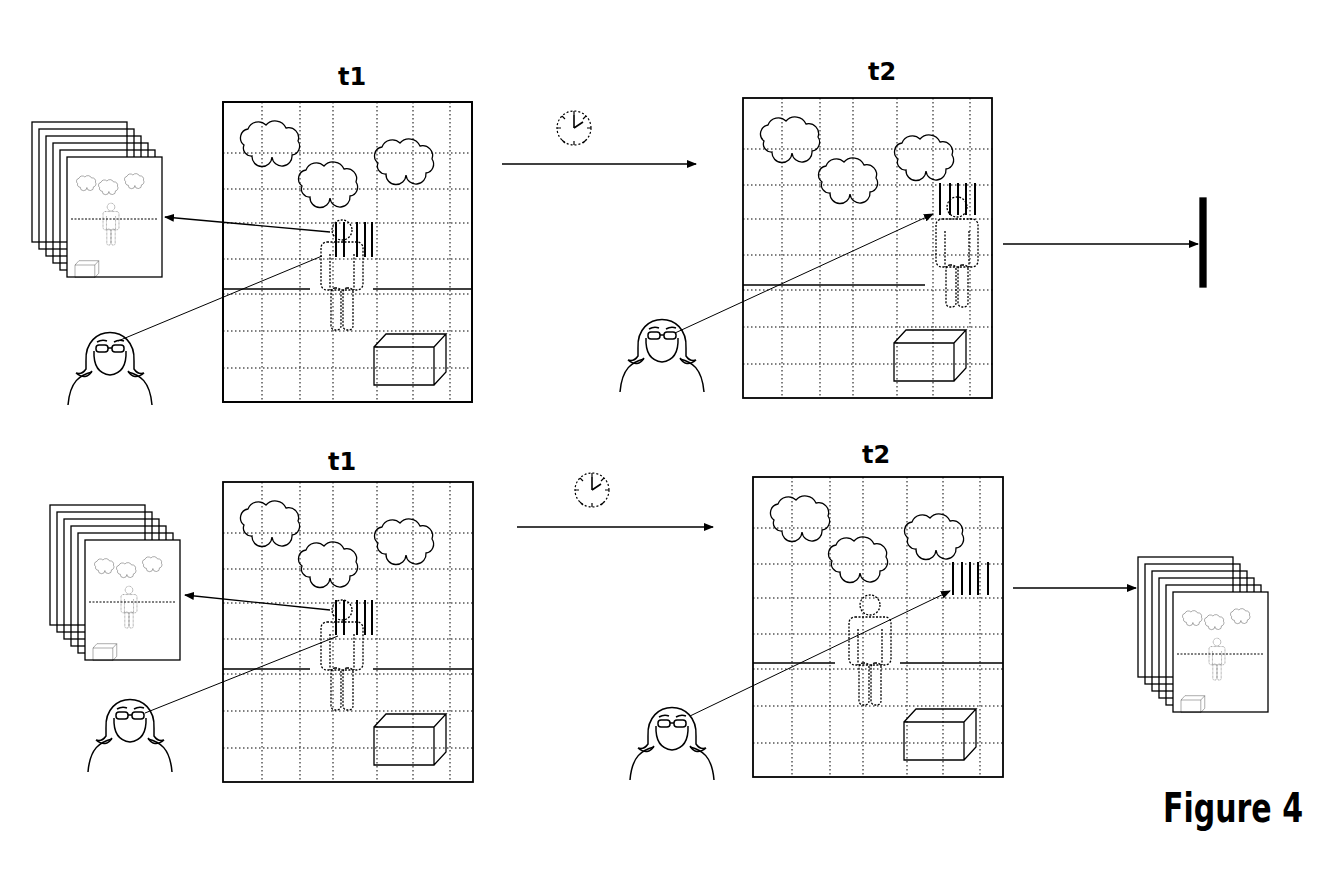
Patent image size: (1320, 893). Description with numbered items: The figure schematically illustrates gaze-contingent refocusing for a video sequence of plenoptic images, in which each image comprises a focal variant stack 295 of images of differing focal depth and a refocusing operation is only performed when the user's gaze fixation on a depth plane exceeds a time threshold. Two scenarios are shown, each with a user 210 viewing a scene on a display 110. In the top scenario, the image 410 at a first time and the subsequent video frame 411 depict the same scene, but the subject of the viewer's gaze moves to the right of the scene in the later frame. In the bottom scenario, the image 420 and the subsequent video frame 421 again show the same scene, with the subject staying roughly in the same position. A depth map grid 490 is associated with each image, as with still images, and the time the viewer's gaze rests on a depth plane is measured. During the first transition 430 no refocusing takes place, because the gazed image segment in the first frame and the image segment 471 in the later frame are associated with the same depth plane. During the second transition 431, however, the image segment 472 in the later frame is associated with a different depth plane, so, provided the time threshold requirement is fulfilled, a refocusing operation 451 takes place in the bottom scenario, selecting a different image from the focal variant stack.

The display 110 is at (472, 260).
The user 210 is at (133, 322).
The focal variant stack 295 is at (58, 122).
The image 410 is at (472, 130).
The subsequent video frame 411 is at (994, 130).
The image 420 is at (477, 515).
The subsequent video frame 421 is at (1003, 502).
The first transition 430 is at (617, 163).
The second transition 431 is at (658, 527).
The refocusing operation 451 is at (1082, 588).
The image segment 471 is at (985, 185).
The image segment 472 is at (978, 562).
The depth map grid 490 is at (380, 122).